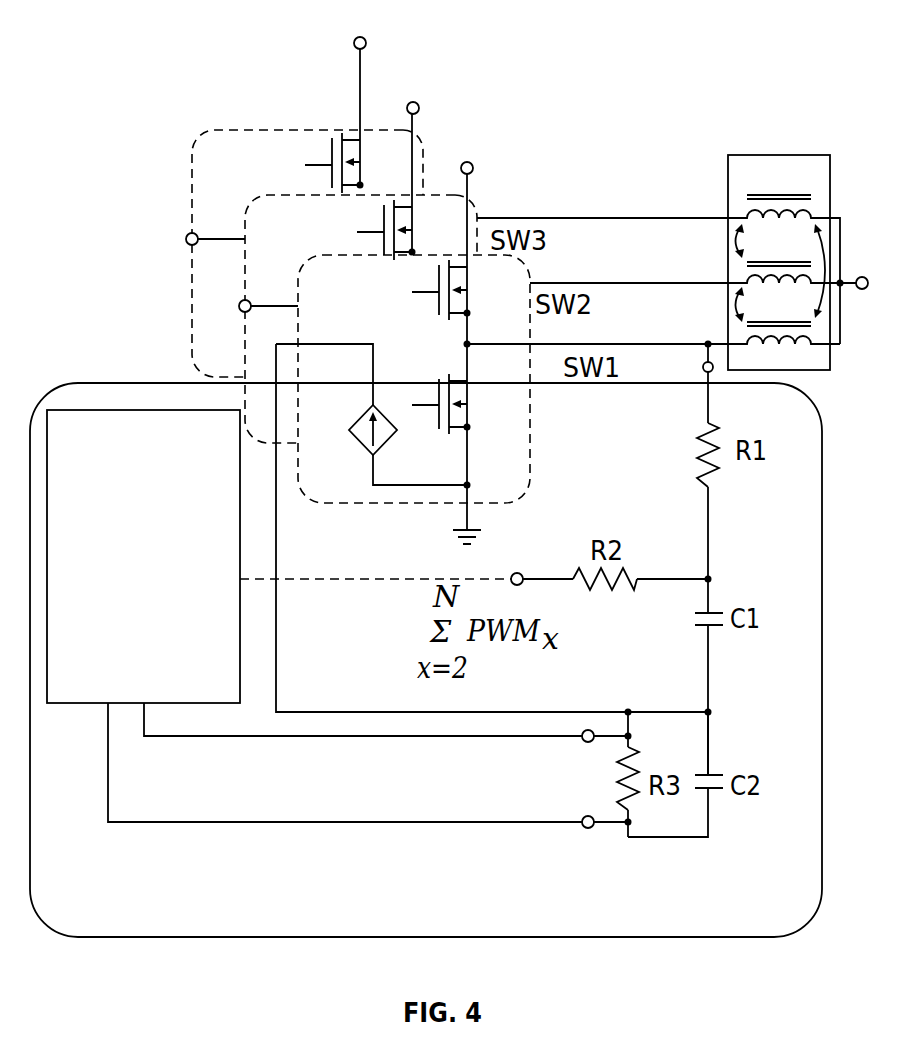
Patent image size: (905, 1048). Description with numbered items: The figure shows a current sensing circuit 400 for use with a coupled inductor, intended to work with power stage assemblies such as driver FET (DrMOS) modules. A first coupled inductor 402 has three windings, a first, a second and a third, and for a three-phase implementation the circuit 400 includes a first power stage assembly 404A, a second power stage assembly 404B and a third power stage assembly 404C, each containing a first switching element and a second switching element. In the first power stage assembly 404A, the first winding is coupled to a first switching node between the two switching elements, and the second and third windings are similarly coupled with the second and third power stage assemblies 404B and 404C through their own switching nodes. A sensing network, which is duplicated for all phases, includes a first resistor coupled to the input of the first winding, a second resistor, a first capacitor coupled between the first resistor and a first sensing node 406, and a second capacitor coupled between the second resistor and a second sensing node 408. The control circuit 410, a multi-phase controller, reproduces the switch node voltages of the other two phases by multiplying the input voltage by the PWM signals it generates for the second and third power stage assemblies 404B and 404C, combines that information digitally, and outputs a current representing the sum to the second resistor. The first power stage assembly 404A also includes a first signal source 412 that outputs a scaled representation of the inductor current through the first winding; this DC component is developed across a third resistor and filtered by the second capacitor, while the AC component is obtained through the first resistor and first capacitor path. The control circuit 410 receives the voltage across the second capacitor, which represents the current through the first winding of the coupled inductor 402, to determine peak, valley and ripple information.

The current sensing circuit 400 is at (783, 44).
The first coupled inductor 402 is at (778, 155).
The first power stage assembly 404A is at (530, 435).
The second power stage assembly 404B is at (428, 195).
The third power stage assembly 404C is at (371, 130).
The first sensing node 406 is at (708, 822).
The second sensing node 408 is at (708, 745).
The control circuit 410 is at (135, 410).
The first signal source 412 is at (387, 414).